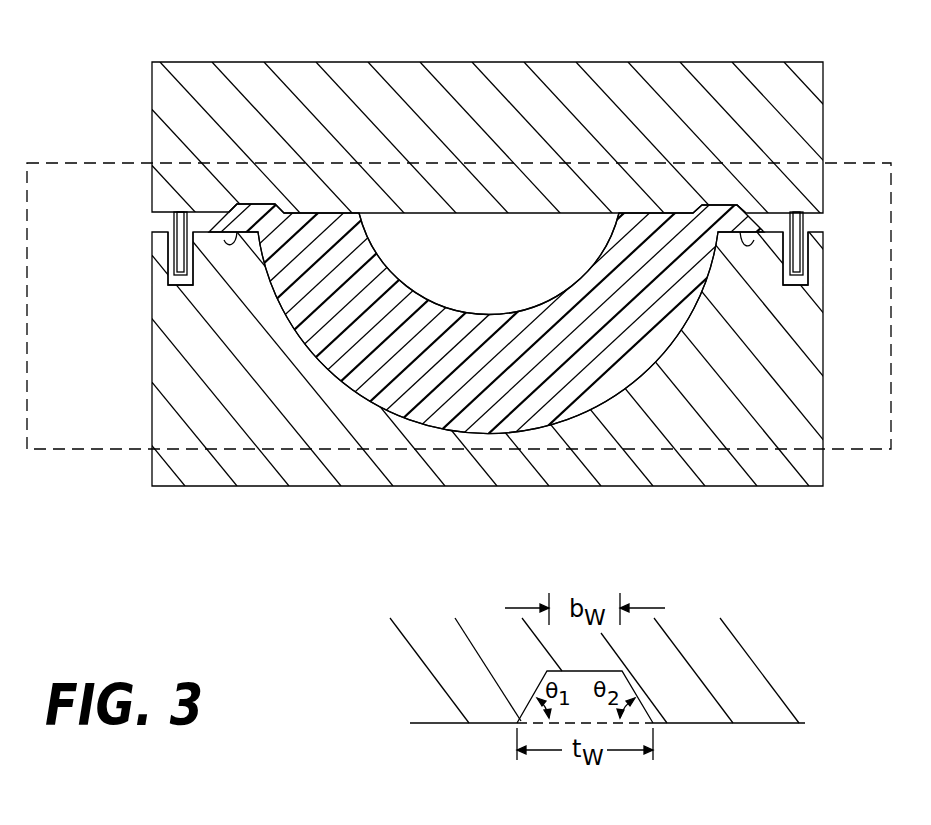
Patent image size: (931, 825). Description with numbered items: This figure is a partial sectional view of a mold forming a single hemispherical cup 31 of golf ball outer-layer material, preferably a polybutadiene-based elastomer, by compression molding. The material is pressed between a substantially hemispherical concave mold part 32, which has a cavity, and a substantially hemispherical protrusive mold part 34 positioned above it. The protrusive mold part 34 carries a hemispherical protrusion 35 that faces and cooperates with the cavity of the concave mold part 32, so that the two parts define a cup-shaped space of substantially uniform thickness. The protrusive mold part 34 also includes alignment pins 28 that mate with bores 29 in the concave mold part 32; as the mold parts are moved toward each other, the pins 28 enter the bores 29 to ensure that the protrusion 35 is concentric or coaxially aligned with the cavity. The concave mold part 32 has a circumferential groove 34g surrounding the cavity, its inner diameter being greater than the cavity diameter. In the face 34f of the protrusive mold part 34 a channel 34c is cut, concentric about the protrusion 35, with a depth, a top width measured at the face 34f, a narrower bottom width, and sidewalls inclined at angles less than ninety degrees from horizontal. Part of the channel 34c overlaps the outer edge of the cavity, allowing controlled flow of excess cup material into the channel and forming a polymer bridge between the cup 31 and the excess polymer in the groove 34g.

The alignment pins 28 is at (797, 220).
The bores 29 is at (797, 282).
The hemispherical cup 31 is at (655, 318).
The concave mold part 32 is at (293, 412).
The protrusive mold part 34 is at (543, 98).
The channel 34c is at (256, 205).
The face 34f is at (648, 213).
The circumferential groove 34g is at (228, 242).
The hemispherical protrusion 35 is at (497, 269).